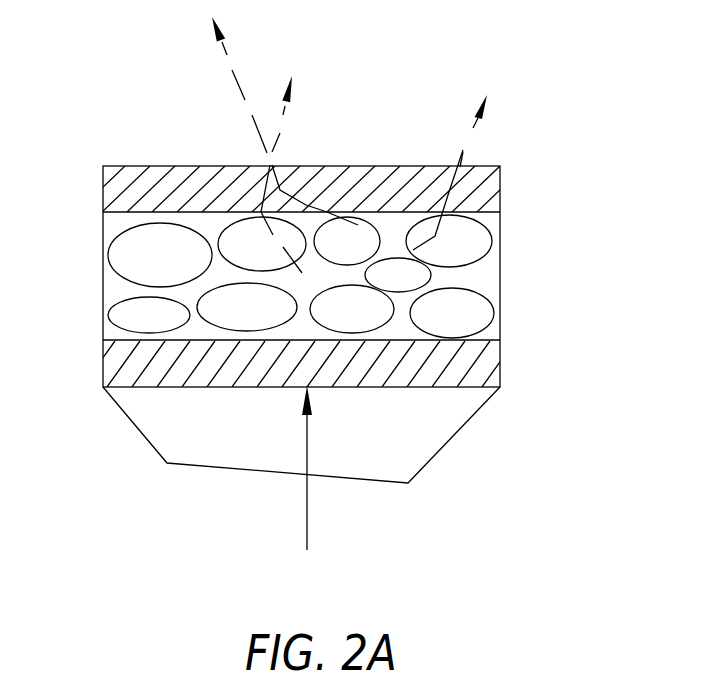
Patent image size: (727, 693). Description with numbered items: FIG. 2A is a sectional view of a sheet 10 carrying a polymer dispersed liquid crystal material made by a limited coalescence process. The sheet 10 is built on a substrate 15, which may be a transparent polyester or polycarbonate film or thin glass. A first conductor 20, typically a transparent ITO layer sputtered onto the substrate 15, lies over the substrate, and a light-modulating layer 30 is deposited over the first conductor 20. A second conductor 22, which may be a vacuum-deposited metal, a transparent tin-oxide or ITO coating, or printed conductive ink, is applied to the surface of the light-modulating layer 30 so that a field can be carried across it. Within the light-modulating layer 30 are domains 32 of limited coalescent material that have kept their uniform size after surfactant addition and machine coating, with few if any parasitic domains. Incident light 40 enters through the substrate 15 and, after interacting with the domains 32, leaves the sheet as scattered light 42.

The sheet 10 is at (172, 101).
The substrate 15 is at (122, 410).
The first conductor 20 is at (102, 356).
The second conductor 22 is at (102, 204).
The light-modulating layer 30 is at (102, 213).
The domains 32 is at (459, 266).
The incident light 40 is at (307, 512).
The scattered light 42 is at (231, 44).